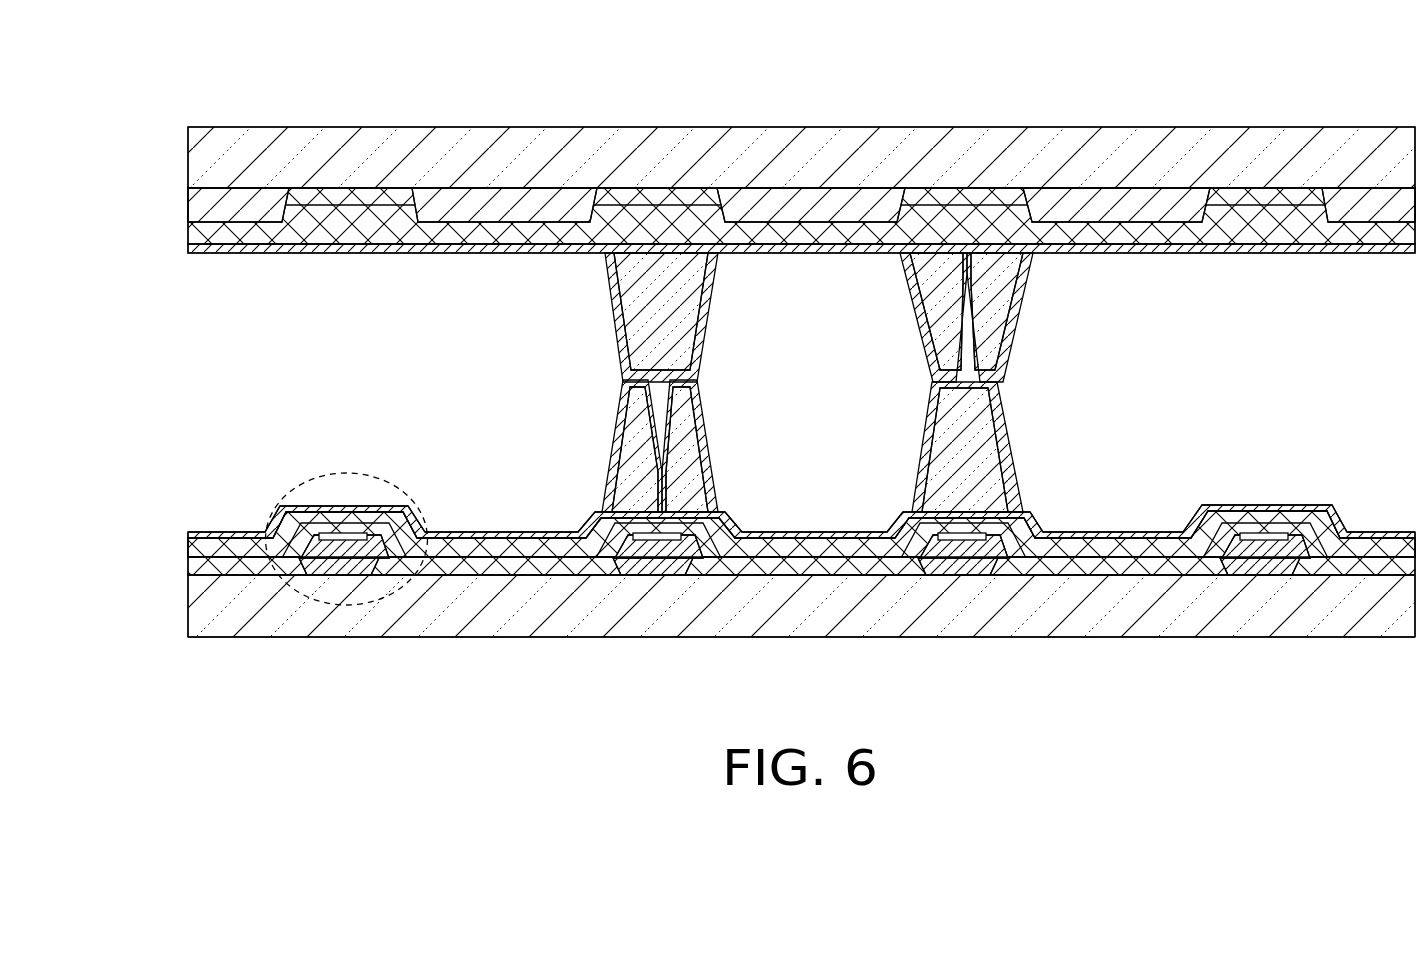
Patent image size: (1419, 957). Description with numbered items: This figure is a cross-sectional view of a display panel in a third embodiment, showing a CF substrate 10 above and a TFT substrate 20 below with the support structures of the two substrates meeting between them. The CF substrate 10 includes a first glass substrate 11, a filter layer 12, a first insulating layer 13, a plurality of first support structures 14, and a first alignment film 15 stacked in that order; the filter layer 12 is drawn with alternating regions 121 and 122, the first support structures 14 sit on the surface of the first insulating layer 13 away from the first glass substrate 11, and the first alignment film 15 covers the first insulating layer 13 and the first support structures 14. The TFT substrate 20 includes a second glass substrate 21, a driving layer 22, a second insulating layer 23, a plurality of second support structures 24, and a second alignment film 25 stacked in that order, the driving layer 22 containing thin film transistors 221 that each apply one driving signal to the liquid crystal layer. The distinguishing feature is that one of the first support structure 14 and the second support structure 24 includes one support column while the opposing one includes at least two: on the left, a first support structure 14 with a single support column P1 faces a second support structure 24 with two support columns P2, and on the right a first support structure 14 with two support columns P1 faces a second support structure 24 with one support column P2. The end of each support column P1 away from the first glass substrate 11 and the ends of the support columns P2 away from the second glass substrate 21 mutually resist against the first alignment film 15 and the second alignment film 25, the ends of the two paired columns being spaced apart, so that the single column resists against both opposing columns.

The CF substrate 10 is at (760, 160).
The first glass substrate 11 is at (200, 157).
The filter layer 12 is at (801, 128).
The color resist unit 121 is at (320, 198).
The black matrix 122 is at (242, 202).
The first insulating layer 13 is at (200, 242).
The first support structure 14 is at (819, 209).
The support column P1 is at (940, 290).
The first alignment film 15 is at (208, 247).
The TFT substrate 20 is at (751, 586).
The second glass substrate 21 is at (207, 620).
The driving layer 22 is at (212, 563).
The thin film transistor 221 is at (388, 595).
The second insulating layer 23 is at (208, 550).
The second support structure 24 is at (831, 557).
The support column P2 is at (640, 490).
The second alignment film 25 is at (223, 533).